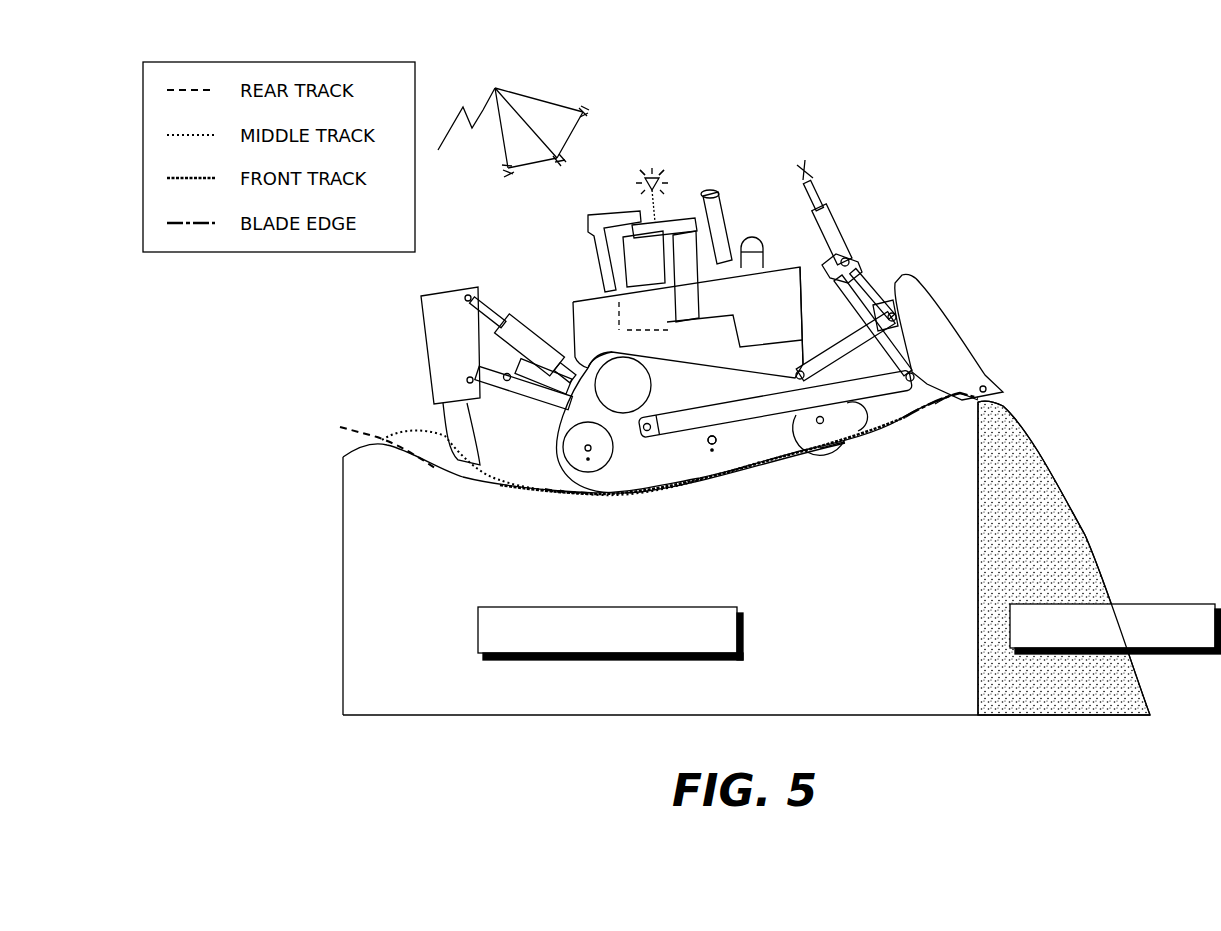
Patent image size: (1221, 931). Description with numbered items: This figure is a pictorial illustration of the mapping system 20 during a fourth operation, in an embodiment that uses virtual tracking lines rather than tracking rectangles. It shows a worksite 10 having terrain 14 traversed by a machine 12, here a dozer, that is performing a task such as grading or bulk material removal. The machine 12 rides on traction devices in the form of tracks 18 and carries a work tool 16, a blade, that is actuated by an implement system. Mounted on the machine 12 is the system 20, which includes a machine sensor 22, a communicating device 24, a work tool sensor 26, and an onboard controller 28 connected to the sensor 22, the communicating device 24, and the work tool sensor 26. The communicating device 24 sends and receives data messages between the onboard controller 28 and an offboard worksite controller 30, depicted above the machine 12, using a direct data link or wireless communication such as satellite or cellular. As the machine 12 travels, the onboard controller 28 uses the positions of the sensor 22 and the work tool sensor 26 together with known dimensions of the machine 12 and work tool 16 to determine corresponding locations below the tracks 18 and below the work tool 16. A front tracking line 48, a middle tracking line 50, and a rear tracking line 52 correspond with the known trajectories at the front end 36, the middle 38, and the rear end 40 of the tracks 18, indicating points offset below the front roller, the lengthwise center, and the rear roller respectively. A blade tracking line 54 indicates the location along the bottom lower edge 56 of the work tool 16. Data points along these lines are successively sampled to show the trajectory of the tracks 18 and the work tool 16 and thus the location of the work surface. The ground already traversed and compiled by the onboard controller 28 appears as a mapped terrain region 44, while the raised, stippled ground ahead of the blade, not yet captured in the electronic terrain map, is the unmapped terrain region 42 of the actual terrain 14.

The worksite 10 is at (1086, 168).
The machine 12 is at (774, 168).
The terrain 14 is at (1080, 530).
The work tool 16 is at (952, 333).
The traction devices 18 is at (548, 450).
The system 20 is at (703, 116).
The machine sensors 22 is at (700, 192).
The communicating device 24 is at (653, 170).
The work tool sensor 26 is at (815, 186).
The onboard controller 28 is at (660, 323).
The offboard worksite controller 30 is at (495, 88).
The front end 36 is at (837, 457).
The middle 38 is at (713, 463).
The rear end 40 is at (570, 493).
The unmapped terrain region 42 is at (1023, 564).
The mapped terrain region 44 is at (793, 643).
The front tracking line 48 is at (812, 445).
The middle tracking line 50 is at (712, 460).
The rear tracking line 52 is at (577, 497).
The blade tracking line 54 is at (943, 407).
The bottom lower edge 56 is at (1013, 412).